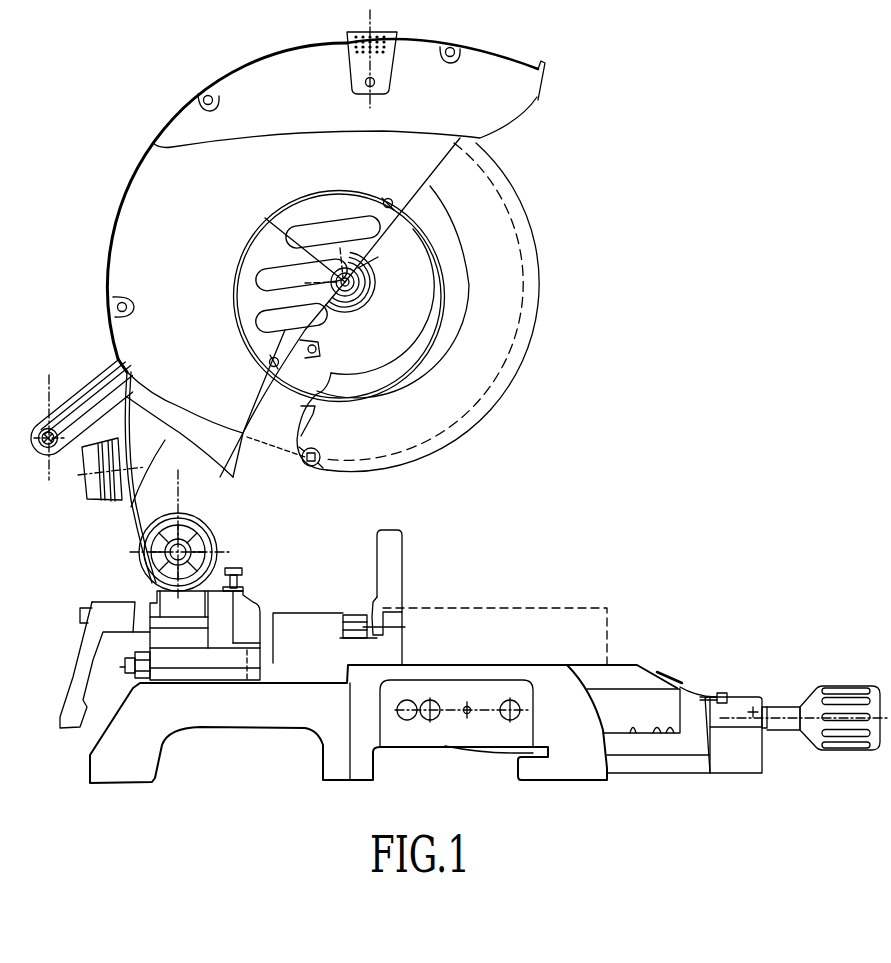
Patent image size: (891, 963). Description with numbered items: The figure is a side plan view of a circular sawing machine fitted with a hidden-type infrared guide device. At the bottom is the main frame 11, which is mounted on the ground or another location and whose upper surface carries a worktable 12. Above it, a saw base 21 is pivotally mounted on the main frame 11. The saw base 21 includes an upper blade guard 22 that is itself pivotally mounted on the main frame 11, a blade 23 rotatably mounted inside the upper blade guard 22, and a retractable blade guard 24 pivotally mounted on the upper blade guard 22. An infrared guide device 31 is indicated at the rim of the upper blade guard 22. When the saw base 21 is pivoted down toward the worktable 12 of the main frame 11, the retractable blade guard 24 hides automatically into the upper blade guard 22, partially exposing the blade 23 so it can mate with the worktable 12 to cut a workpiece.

The main frame 11 is at (338, 720).
The worktable 12 is at (593, 660).
The saw base 21 is at (118, 508).
The upper blade guard 22 is at (137, 188).
The blade 23 is at (270, 443).
The retractable blade guard 24 is at (540, 292).
The infrared guide device 31 is at (549, 50).